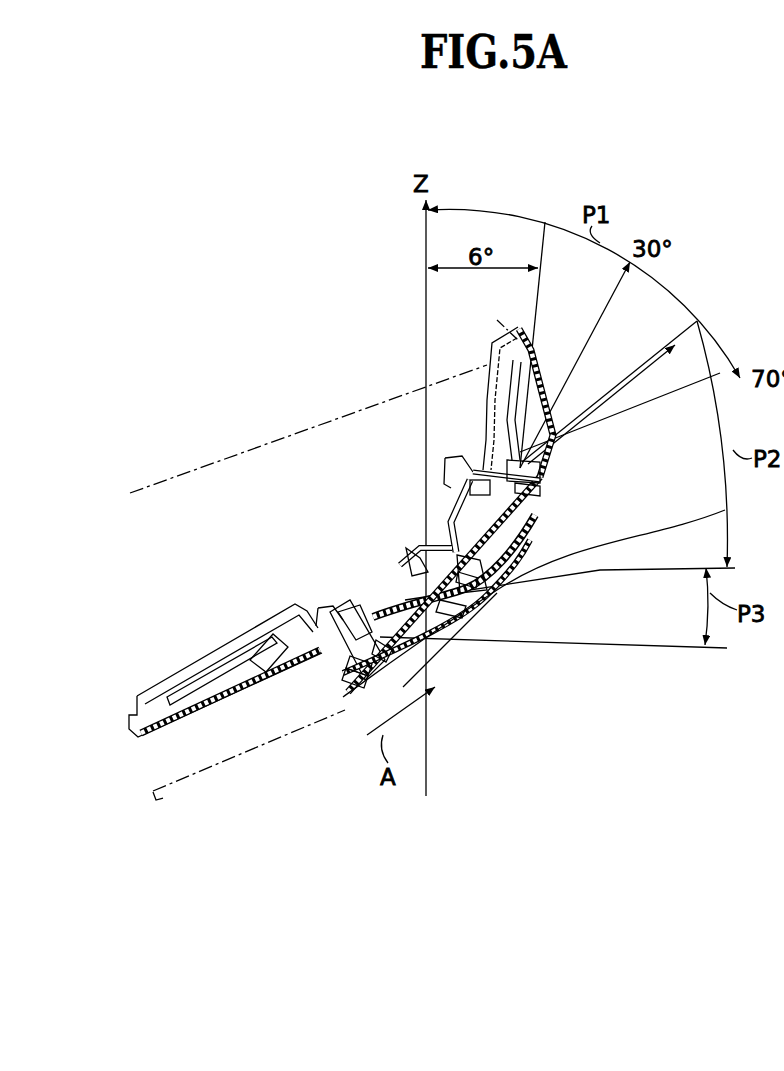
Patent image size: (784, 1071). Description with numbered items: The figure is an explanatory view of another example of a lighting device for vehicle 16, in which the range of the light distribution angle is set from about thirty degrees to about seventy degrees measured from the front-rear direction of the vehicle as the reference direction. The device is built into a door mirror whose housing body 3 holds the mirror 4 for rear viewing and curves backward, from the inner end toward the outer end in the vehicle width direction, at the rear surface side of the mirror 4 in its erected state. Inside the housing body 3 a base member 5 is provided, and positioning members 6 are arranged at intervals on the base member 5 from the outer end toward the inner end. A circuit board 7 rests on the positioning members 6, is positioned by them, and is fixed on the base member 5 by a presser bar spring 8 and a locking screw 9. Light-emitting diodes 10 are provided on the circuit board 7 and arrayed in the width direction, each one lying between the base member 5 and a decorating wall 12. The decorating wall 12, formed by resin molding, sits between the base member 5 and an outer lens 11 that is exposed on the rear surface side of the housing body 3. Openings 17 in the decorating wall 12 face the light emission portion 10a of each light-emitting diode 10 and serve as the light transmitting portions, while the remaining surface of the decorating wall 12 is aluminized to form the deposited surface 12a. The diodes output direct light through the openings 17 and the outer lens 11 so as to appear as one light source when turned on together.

The housing body 3 is at (497, 320).
The mirror 4 is at (333, 420).
The base member 5 is at (277, 600).
The positioning member 6 is at (483, 418).
The circuit board 7 is at (540, 497).
The presser bar spring 8 is at (455, 605).
The locking screw 9 is at (457, 450).
The light-emitting diode 10 is at (548, 470).
The light emission portion 10a is at (492, 390).
The outer lens 11 is at (560, 455).
The decorating wall 12 is at (428, 567).
The deposited surface 12a is at (565, 383).
The lighting device for vehicle 16 is at (465, 648).
The opening 17 is at (555, 447).